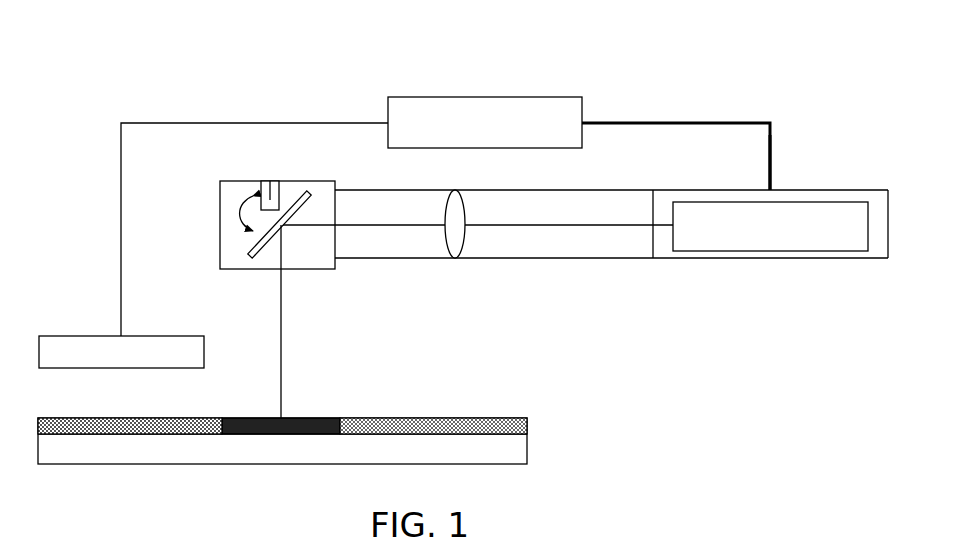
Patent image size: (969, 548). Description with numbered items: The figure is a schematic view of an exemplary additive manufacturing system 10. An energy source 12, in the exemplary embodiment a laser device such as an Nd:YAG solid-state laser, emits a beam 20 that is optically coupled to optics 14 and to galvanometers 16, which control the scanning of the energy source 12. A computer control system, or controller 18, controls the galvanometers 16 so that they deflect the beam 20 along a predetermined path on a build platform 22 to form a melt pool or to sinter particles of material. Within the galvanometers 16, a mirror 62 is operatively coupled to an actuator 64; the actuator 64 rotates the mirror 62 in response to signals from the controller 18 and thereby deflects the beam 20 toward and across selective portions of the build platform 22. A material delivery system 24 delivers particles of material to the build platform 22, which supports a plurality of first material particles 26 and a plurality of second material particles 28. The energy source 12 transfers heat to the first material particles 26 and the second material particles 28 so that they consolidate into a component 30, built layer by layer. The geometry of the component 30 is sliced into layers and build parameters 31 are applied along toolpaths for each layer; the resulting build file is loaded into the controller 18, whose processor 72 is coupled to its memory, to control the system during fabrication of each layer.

The additive manufacturing system 10 is at (243, 52).
The energy source 12 is at (793, 252).
The optics 14 is at (462, 246).
The galvanometers 16 is at (230, 181).
The controller 18 is at (535, 97).
The beam 20 is at (598, 228).
The build platform 22 is at (527, 446).
The material delivery system 24 is at (166, 336).
The first material particles 26 is at (442, 418).
The second material particles 28 is at (186, 418).
The component 30 is at (306, 418).
The build parameters 31 is at (655, 122).
The mirror 62 is at (306, 181).
The actuator 64 is at (270, 181).
The processor 72 is at (772, 156).